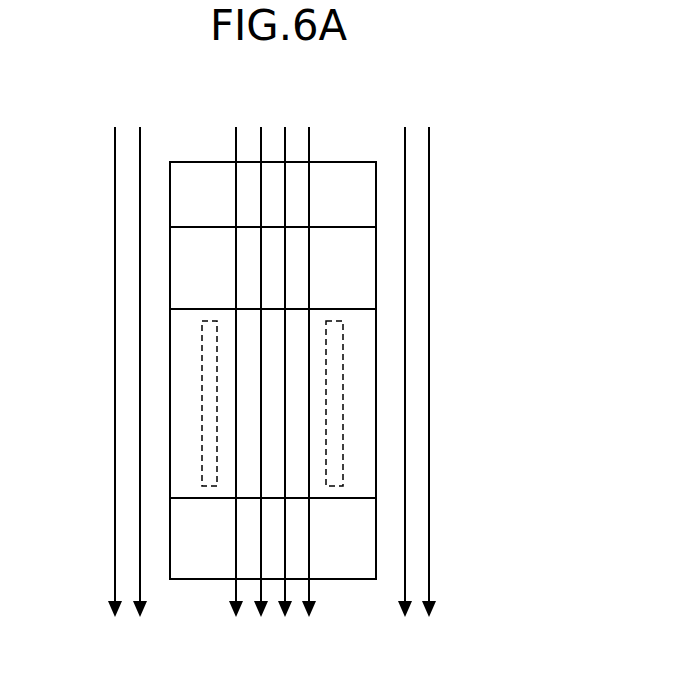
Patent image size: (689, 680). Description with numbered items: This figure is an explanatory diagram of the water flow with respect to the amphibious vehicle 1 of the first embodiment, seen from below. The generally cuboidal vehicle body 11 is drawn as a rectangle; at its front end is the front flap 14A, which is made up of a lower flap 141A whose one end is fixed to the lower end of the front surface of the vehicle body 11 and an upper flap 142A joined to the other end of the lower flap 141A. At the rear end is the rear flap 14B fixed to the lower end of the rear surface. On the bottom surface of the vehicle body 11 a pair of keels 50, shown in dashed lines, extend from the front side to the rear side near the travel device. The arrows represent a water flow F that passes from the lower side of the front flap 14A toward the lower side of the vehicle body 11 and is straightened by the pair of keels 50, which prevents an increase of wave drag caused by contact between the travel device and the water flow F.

The amphibious vehicle 1 is at (454, 117).
The upper flap 142A is at (376, 193).
The front flap 14A is at (376, 248).
The lower flap 141A is at (376, 283).
The vehicle body 11 is at (376, 458).
The rear flap 14B is at (376, 527).
The keels 50 is at (202, 396).
The water flow F is at (405, 568).